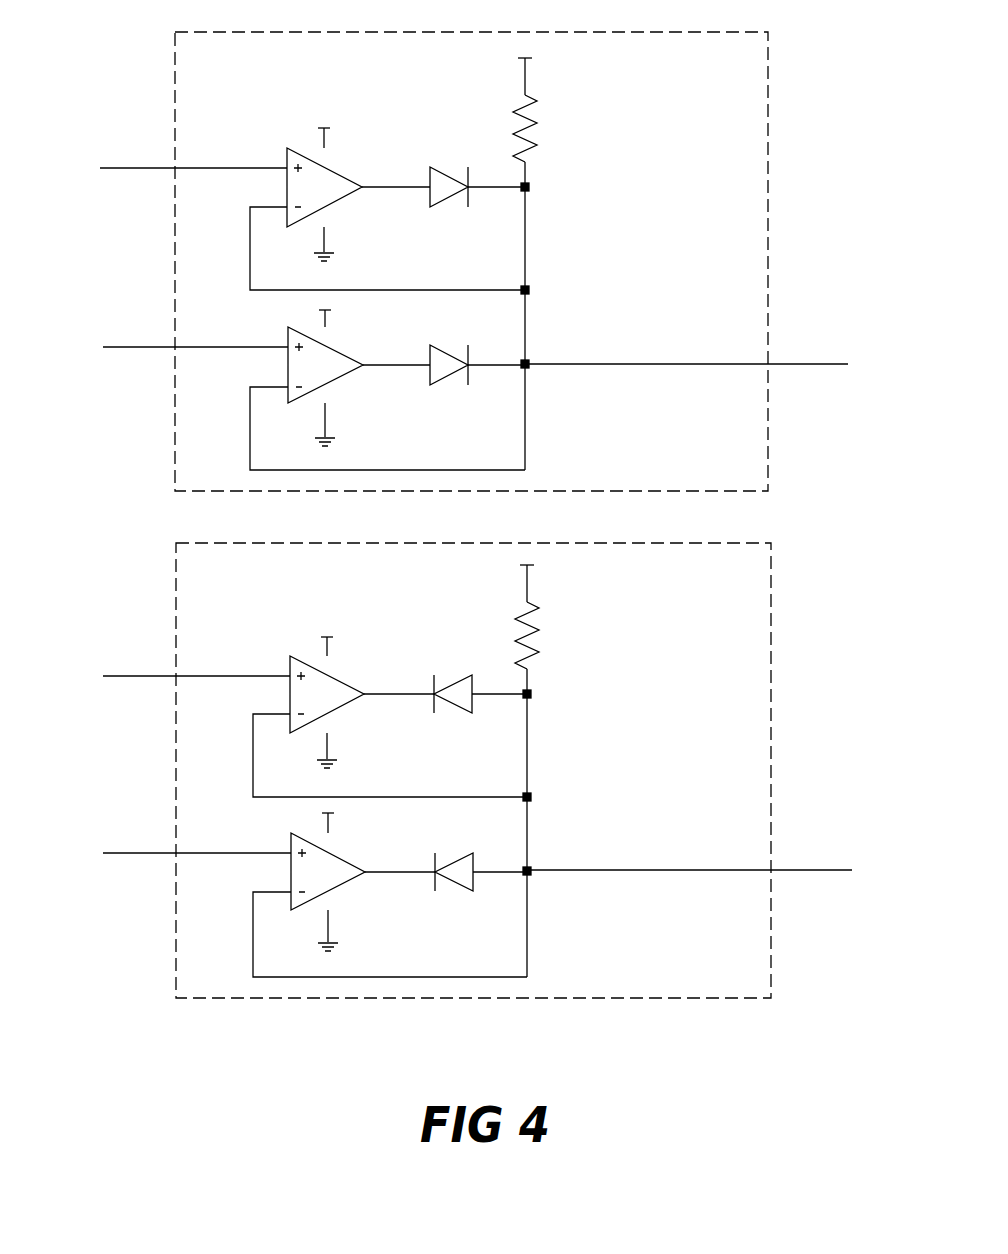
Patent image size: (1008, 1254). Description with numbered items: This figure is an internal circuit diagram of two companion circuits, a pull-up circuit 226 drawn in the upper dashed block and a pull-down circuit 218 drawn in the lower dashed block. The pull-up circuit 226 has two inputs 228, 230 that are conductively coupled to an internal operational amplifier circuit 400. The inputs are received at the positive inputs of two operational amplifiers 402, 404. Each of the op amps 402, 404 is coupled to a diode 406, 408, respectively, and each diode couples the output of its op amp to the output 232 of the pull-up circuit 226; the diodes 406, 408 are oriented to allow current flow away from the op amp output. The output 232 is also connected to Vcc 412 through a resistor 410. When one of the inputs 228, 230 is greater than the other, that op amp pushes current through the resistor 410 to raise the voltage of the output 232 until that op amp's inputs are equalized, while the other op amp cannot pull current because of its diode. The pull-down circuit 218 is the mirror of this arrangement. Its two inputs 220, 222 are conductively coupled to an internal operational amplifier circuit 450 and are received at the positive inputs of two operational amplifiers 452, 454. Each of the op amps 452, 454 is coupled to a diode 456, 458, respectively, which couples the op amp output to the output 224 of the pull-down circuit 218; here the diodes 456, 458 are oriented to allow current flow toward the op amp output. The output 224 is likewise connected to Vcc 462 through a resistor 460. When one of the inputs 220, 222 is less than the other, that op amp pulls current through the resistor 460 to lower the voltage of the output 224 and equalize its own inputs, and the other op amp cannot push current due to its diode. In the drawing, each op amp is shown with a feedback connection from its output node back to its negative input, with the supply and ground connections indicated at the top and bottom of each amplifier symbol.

The pull-up circuit 226 is at (735, 472).
The pull-down circuit 218 is at (738, 979).
The internal operational amplifier circuit 400 is at (588, 190).
The internal operational amplifier circuit 450 is at (590, 697).
The operational amplifier 402 is at (290, 148).
The operational amplifier 404 is at (280, 323).
The operational amplifier 452 is at (292, 655).
The operational amplifier 454 is at (284, 830).
The diode 406 is at (440, 165).
The diode 408 is at (446, 342).
The diode 456 is at (440, 670).
The diode 458 is at (448, 848).
The resistor 410 is at (545, 105).
The resistor 460 is at (548, 615).
The Vcc 412 is at (515, 62).
The Vcc 462 is at (518, 568).
The input 228 is at (135, 158).
The input 230 is at (147, 334).
The output 232 is at (803, 350).
The input 222 is at (143, 663).
The input 220 is at (156, 838).
The output 224 is at (798, 857).